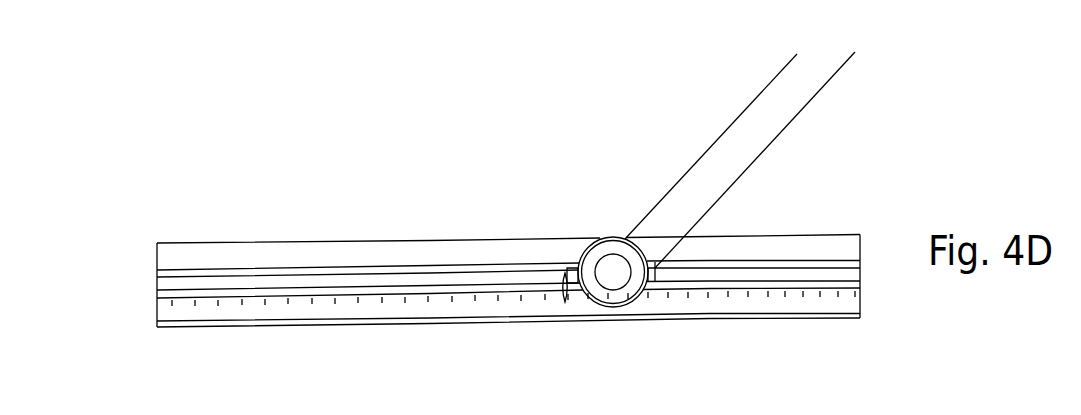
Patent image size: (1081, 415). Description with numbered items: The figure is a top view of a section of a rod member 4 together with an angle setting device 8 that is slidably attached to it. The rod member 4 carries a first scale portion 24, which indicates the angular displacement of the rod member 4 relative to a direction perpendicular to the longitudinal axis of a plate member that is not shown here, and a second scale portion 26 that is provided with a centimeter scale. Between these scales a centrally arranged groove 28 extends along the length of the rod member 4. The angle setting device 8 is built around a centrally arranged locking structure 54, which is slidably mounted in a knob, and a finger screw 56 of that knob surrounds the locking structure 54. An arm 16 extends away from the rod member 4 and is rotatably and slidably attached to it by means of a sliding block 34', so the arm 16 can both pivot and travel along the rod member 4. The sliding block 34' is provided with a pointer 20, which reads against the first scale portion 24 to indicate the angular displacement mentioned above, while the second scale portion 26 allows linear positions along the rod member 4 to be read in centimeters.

The rod member 4 is at (383, 231).
The angle setting device 8 is at (609, 229).
The arm 16 is at (700, 180).
The pointer 20 is at (565, 266).
The first scale portion 24 is at (283, 308).
The second scale portion 26 is at (474, 245).
The groove 28 is at (235, 286).
The sliding block 34' is at (537, 246).
The locking structure 54 is at (617, 257).
The finger screw 56 is at (647, 262).